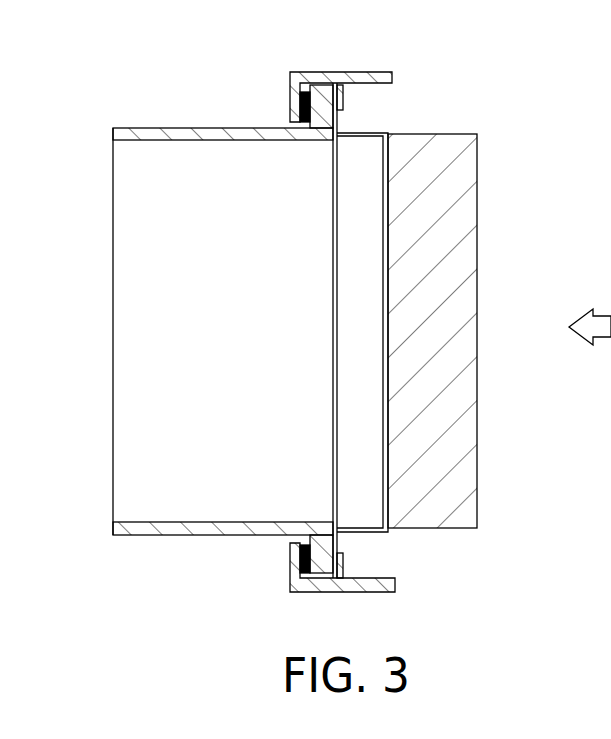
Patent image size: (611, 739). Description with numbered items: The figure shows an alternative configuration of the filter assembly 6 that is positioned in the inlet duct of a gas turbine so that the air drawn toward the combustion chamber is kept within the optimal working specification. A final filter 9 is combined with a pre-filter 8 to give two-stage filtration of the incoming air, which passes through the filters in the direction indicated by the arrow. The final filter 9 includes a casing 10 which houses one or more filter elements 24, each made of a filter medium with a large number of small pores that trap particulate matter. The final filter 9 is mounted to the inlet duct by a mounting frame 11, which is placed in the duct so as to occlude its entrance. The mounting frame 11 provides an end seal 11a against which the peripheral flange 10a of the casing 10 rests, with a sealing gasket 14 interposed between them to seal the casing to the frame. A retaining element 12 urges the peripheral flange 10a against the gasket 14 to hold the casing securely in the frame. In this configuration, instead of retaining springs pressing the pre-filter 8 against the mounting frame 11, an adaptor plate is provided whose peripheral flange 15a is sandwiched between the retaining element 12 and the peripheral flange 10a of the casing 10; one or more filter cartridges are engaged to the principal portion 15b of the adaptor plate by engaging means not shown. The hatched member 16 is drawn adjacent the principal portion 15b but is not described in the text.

The filter assembly 6 is at (266, 591).
The pre-filter 8 is at (492, 159).
The final filter 9 is at (122, 258).
The casing 10 is at (152, 128).
The peripheral flange 10a is at (321, 105).
The mounting frame 11 is at (376, 72).
The end seal 11a is at (300, 110).
The retaining element 12 is at (345, 555).
The sealing gasket 14 is at (300, 555).
The peripheral flange of adaptor plate 15a is at (343, 108).
The principal portion of adaptor plate 15b is at (385, 240).
The block 16 is at (467, 256).
The filter element 24 is at (234, 349).